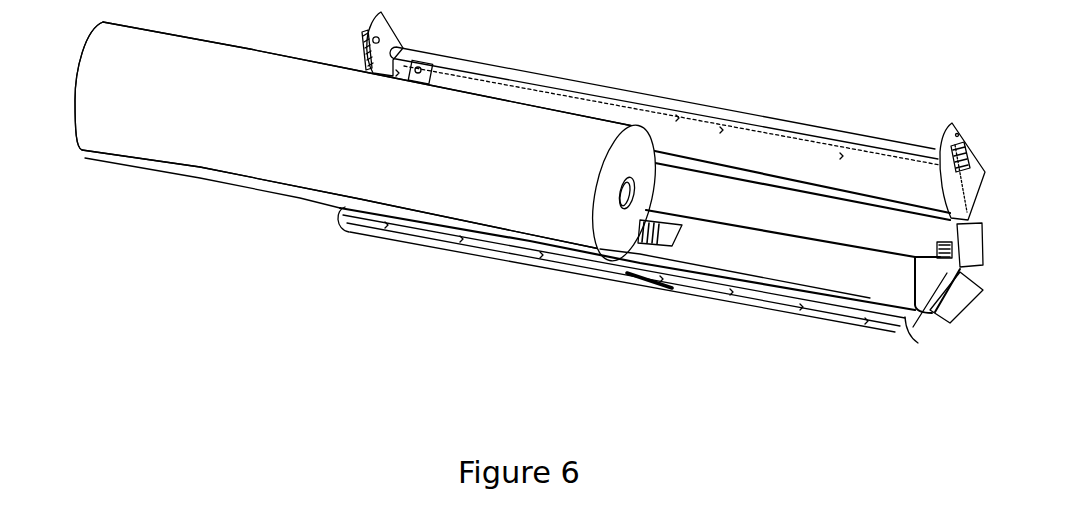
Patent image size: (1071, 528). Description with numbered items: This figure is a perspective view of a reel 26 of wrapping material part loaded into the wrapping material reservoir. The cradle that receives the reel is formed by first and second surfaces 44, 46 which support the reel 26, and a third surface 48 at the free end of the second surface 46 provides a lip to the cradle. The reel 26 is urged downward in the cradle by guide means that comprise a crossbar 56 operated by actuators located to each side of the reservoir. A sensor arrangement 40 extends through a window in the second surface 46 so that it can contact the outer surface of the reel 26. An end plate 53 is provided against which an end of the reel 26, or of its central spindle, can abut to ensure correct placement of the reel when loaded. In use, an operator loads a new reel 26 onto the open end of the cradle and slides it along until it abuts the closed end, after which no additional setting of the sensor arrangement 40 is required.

The reel of wrapping material 26 is at (198, 125).
The crossbar 56 is at (592, 93).
The first surface 44 is at (860, 227).
The second surface 46 is at (860, 282).
The third surface 48 is at (757, 298).
The sensor arrangement 40 is at (625, 272).
The end plate 53 is at (925, 280).